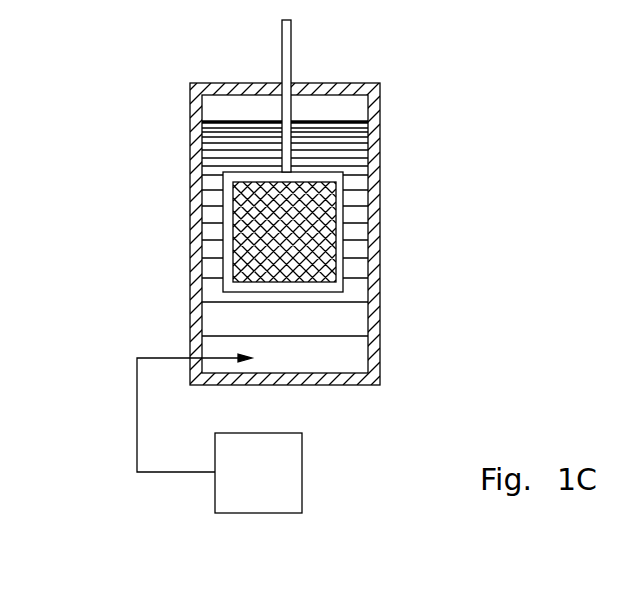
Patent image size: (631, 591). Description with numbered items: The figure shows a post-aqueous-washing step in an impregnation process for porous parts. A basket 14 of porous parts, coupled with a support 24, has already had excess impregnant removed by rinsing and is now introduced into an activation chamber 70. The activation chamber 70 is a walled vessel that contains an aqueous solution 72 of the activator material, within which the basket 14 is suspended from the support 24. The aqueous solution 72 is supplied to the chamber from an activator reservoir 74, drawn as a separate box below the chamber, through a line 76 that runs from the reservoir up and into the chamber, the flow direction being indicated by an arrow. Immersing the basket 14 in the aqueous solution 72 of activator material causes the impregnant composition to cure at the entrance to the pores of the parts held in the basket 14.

The support 24 is at (292, 57).
The basket 14 is at (333, 194).
The activation chamber 70 is at (380, 264).
The aqueous solution 72 is at (332, 354).
The activator reservoir 74 is at (275, 495).
The line 76 is at (163, 473).